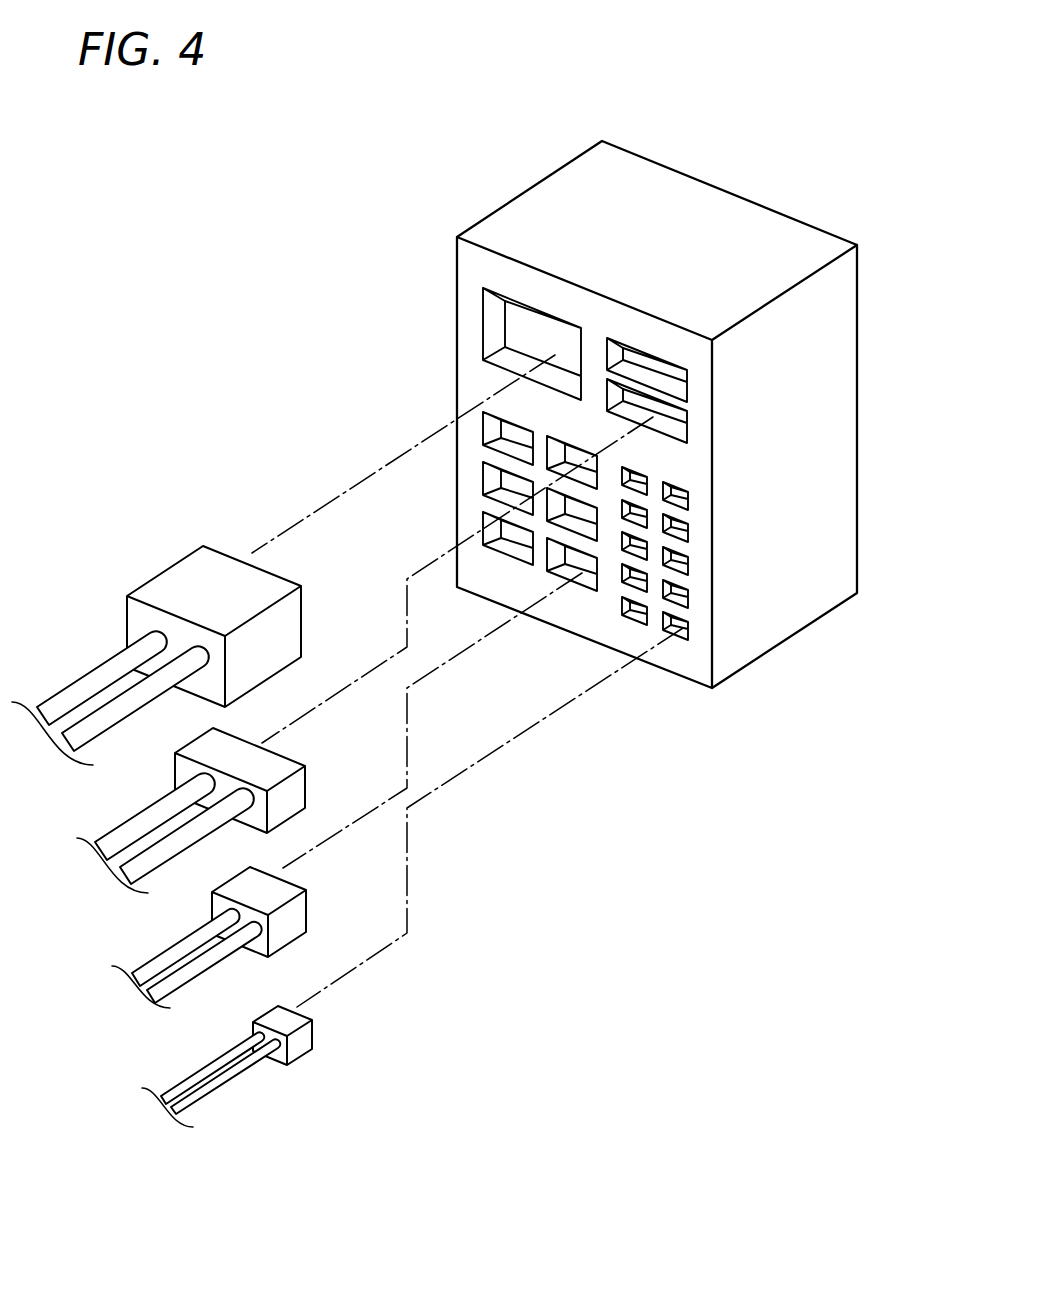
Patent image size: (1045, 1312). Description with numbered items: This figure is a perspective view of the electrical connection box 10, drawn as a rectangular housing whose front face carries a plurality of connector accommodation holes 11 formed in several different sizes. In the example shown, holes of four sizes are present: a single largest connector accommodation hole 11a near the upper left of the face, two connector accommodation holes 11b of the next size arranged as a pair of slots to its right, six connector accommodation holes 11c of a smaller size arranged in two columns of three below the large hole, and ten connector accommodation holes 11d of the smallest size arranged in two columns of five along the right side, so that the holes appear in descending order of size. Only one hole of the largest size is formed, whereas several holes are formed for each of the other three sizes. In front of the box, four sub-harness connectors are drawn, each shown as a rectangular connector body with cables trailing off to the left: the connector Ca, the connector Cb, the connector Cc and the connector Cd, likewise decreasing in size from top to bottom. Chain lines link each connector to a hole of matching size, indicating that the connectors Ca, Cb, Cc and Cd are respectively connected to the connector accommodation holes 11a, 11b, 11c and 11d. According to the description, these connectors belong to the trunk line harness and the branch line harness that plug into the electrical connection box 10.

The electrical connection box 10 is at (595, 384).
The connector accommodation holes 11 is at (581, 464).
The connector accommodation hole 11a is at (495, 322).
The connector accommodation holes 11b is at (687, 387).
The connector accommodation holes 11c is at (493, 484).
The connector accommodation holes 11d is at (688, 535).
The connector Ca is at (177, 562).
The connector Cb is at (192, 742).
The connector Cc is at (223, 885).
The connector Cd is at (265, 1013).